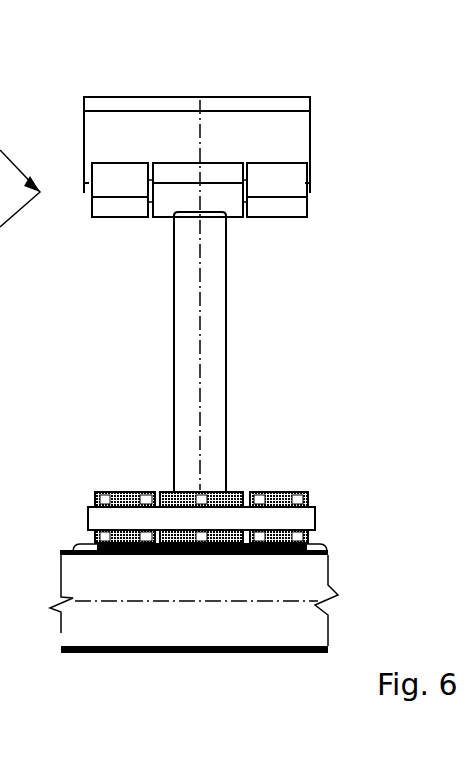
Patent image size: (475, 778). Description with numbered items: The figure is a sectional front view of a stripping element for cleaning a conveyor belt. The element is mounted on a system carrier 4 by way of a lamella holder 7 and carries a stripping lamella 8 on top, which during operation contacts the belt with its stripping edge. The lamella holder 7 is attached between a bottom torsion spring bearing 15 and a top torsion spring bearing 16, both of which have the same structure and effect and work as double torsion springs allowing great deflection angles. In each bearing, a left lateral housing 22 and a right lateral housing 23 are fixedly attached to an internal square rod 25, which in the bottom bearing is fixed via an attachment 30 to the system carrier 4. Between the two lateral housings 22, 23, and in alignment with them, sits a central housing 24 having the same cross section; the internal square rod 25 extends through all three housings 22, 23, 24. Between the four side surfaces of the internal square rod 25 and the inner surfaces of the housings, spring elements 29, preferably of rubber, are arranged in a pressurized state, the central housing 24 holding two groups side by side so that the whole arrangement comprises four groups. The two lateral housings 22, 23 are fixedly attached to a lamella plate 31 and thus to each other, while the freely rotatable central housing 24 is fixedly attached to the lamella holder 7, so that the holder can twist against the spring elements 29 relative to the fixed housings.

The system carrier 4 is at (307, 623).
The lamella holder 7 is at (213, 393).
The stripping lamella 8 is at (350, 80).
The bottom torsion spring bearing 15 is at (230, 471).
The top torsion spring bearing 16 is at (270, 184).
The left lateral housing 22 is at (120, 212).
The right lateral housing 23 is at (268, 213).
The central housing 24 is at (173, 200).
The internal square rod 25 is at (306, 520).
The spring elements 29 is at (255, 492).
The attachment 30 is at (62, 557).
The lamella plate 31 is at (305, 128).